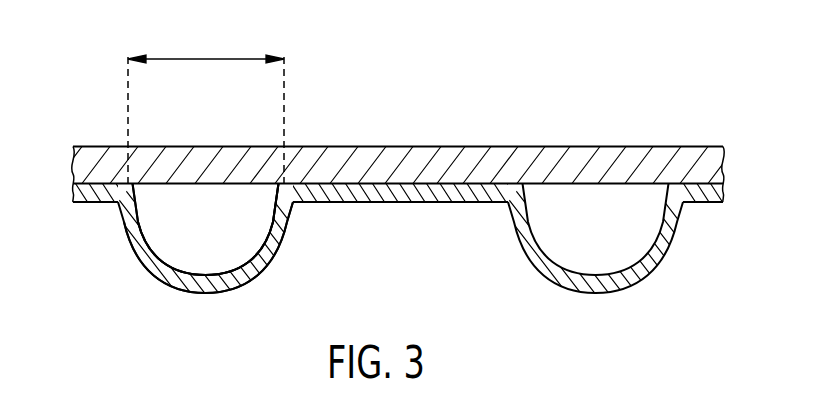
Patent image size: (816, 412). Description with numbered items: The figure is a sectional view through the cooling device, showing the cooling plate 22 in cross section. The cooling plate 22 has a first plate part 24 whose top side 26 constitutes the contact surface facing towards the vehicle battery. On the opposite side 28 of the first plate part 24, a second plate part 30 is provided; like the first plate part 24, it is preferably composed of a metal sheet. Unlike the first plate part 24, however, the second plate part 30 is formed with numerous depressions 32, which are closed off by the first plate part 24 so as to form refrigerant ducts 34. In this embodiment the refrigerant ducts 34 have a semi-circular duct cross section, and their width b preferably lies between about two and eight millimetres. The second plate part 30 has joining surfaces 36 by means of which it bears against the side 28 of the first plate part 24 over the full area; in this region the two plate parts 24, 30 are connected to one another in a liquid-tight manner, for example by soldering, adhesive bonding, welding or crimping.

The cooling plate 22 is at (643, 114).
The first plate part 24 is at (418, 155).
The top side 26 is at (223, 146).
The opposite side 28 is at (250, 185).
The second plate part 30 is at (250, 283).
The depressions 32 is at (195, 258).
The refrigerant ducts 34 is at (190, 230).
The joining surfaces 36 is at (402, 202).